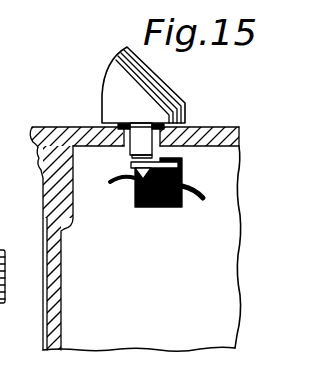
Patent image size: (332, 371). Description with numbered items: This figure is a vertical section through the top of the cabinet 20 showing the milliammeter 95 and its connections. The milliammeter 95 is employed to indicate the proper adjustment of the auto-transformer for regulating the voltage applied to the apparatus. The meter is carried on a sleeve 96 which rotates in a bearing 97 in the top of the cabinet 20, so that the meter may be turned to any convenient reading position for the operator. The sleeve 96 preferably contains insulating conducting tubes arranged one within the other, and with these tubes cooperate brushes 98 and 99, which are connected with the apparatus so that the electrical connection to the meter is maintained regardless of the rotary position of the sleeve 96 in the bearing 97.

The frame body 20 is at (137, 248).
The milliammeter 95 is at (111, 68).
The sleeve 96 is at (143, 135).
The bearing 97 is at (183, 129).
The brush 98 is at (130, 164).
The brush 99 is at (138, 179).